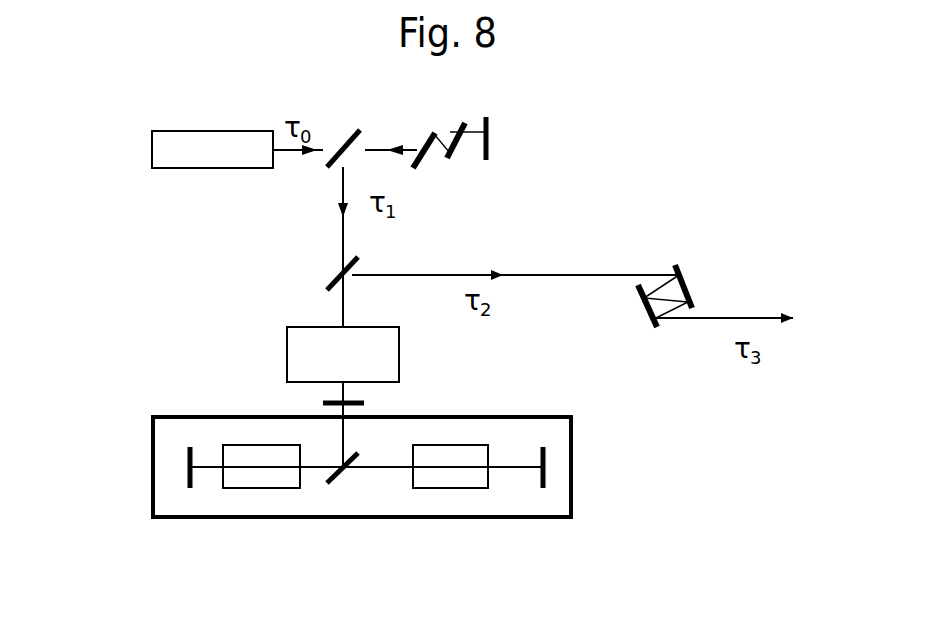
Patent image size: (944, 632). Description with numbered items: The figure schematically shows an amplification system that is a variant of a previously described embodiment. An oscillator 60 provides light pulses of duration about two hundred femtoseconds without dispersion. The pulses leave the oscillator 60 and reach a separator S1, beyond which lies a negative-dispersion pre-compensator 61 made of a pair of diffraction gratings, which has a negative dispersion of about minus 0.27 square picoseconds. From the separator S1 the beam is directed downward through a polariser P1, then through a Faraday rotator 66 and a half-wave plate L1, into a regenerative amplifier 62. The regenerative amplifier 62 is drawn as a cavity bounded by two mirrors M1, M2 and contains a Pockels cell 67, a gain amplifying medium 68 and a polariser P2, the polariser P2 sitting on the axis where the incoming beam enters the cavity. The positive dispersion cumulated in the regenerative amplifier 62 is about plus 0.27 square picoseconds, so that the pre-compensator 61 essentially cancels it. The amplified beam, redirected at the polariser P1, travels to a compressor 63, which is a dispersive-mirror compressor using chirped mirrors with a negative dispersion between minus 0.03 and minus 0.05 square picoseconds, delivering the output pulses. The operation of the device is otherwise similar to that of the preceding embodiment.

The oscillator 60 is at (210, 165).
The separator S1 is at (367, 121).
The negative-dispersion pre-compensator 61 is at (492, 153).
The polariser P1 is at (323, 288).
The Faraday rotator 66 is at (285, 335).
The half-wave plate L1 is at (364, 401).
The regenerative amplifier 62 is at (573, 448).
The mirror M1 is at (190, 448).
The Pockels cell 67 is at (267, 490).
The polariser P2 is at (330, 483).
The gain amplifying medium 68 is at (450, 490).
The mirror M2 is at (547, 470).
The compressor 63 is at (682, 272).